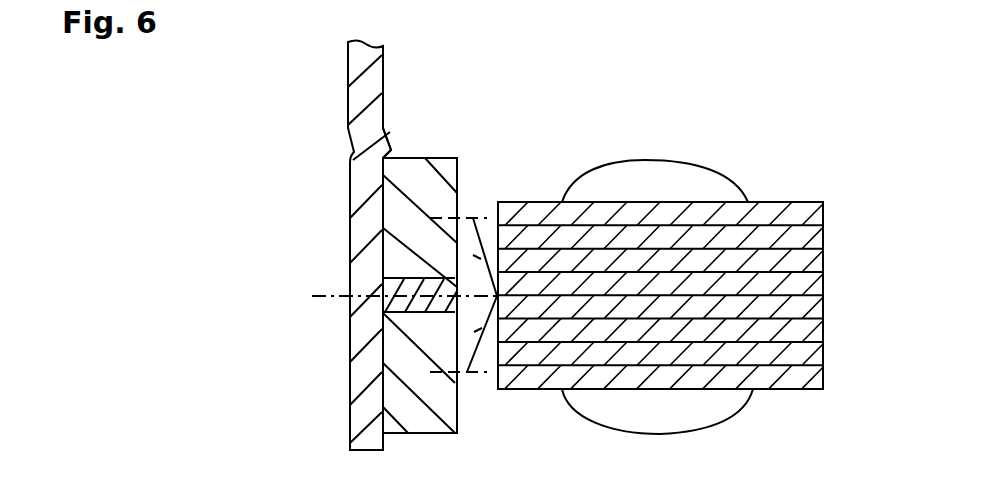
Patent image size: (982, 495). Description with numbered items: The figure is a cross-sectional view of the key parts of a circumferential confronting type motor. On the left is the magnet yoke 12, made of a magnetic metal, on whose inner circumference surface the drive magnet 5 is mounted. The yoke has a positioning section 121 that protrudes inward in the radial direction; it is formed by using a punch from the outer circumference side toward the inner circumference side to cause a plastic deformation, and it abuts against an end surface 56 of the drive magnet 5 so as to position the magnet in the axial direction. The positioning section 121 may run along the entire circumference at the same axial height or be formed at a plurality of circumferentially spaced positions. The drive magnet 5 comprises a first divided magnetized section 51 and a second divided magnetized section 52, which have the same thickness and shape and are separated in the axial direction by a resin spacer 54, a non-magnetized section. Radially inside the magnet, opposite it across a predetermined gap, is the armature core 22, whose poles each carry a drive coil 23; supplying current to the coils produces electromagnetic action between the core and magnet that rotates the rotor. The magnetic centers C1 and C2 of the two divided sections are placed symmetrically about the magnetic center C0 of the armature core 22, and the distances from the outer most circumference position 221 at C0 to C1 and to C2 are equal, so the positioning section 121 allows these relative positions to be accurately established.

The magnet yoke 12 is at (368, 97).
The positioning section 121 is at (391, 150).
The drive magnet 5 is at (333, 261).
The first divided magnetized section 51 is at (402, 213).
The second divided magnetized section 52 is at (403, 390).
The resin spacer 54 is at (406, 277).
The end surface 56 is at (436, 157).
The armature core 22 is at (780, 215).
The outer most circumference position 221 is at (500, 297).
The drive coil 23 is at (640, 180).
The magnetic center of the armature core C0 is at (383, 298).
The magnetic center of the first divided magnetized section C1 is at (473, 217).
The magnetic center of the second divided magnetized section C2 is at (476, 373).